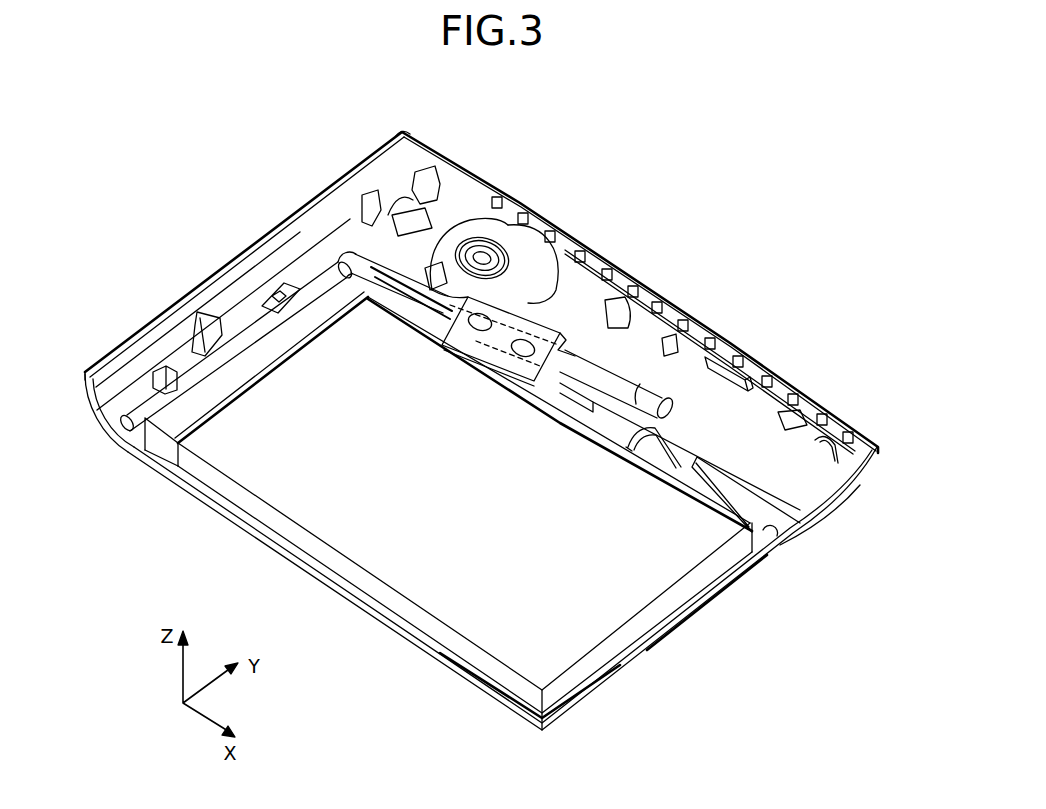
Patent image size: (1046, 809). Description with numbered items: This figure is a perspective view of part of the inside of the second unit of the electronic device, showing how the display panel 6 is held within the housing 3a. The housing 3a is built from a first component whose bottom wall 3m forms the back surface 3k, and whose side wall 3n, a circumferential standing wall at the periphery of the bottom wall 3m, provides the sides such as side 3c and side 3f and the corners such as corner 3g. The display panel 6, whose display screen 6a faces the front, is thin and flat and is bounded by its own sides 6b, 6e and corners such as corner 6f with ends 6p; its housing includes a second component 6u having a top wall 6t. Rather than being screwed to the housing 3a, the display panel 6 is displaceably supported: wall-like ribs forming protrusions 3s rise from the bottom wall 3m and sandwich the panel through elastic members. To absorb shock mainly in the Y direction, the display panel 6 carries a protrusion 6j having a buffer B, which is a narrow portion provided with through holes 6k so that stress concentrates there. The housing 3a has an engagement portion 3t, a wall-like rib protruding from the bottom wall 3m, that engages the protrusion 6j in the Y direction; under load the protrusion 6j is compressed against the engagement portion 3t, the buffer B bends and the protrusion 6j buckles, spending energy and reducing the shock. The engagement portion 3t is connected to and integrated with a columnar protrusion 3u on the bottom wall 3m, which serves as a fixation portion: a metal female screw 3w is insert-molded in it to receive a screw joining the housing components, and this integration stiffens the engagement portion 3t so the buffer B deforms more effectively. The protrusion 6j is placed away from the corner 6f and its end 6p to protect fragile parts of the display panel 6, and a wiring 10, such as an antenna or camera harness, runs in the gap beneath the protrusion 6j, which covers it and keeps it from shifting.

The housing 3a is at (865, 427).
The side 3c is at (782, 382).
The side 3f is at (183, 302).
The corner 3g is at (402, 128).
The back surface 3k is at (587, 698).
The bottom wall 3m is at (773, 545).
The side wall 3n is at (107, 385).
The protrusion 3s is at (166, 376).
The engagement portion 3t is at (567, 338).
The protrusion 3u is at (494, 260).
The female screw 3w is at (493, 245).
The display panel 6 is at (137, 436).
The display screen 6a is at (272, 388).
The side 6b is at (600, 372).
The side 6e is at (152, 385).
The corner 6f is at (307, 277).
The protrusion 6j is at (614, 312).
The through hole 6k is at (517, 368).
The end 6p is at (347, 275).
The top wall 6t is at (170, 423).
The second component 6u is at (161, 458).
The wiring 10 is at (344, 280).
The buffer B is at (525, 367).